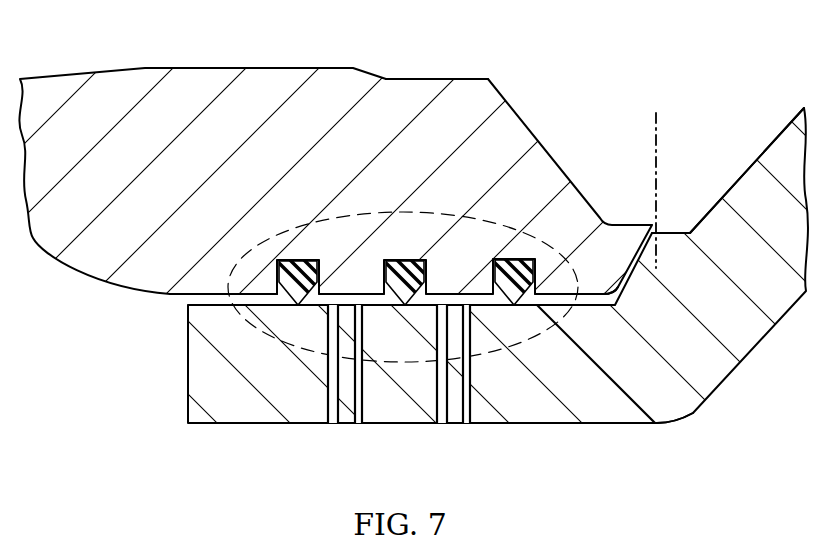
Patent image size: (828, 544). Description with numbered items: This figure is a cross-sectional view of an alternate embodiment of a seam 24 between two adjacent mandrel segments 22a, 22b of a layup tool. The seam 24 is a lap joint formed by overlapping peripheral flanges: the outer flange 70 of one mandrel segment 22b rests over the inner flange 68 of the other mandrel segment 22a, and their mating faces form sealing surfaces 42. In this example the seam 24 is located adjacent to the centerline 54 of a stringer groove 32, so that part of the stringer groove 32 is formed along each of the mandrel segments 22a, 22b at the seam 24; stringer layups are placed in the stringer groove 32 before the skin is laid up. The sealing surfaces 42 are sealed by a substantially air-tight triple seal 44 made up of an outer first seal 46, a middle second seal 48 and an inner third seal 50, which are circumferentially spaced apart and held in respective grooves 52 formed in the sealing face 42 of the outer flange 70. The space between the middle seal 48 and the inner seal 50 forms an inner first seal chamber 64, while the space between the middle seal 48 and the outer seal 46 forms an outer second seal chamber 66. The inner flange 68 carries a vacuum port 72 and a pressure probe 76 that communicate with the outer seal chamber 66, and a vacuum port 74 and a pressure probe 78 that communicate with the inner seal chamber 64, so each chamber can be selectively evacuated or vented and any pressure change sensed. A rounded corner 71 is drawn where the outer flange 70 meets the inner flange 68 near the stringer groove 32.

The outer flange 70 is at (202, 68).
The mandrel segment 22b is at (412, 80).
The stringer groove 32 is at (710, 91).
The centerline 54 is at (655, 126).
The triple seal 44 is at (340, 208).
The inner third seal 50 is at (297, 260).
The middle second seal 48 is at (407, 261).
The outer first seal 46 is at (513, 258).
The groove 52 is at (258, 290).
The outer second seal chamber 66 is at (348, 298).
The sealing surface 42 is at (230, 306).
The seam 24 is at (173, 299).
The rounded corner 71 is at (605, 300).
The inner first seal chamber 64 is at (460, 308).
The vacuum port 74 is at (331, 425).
The pressure probe 78 is at (362, 425).
The vacuum port 72 is at (441, 425).
The pressure probe 76 is at (469, 425).
The inner flange 68 is at (600, 425).
The mandrel segment 22a is at (690, 424).